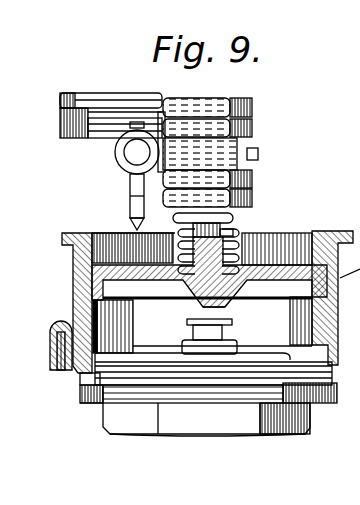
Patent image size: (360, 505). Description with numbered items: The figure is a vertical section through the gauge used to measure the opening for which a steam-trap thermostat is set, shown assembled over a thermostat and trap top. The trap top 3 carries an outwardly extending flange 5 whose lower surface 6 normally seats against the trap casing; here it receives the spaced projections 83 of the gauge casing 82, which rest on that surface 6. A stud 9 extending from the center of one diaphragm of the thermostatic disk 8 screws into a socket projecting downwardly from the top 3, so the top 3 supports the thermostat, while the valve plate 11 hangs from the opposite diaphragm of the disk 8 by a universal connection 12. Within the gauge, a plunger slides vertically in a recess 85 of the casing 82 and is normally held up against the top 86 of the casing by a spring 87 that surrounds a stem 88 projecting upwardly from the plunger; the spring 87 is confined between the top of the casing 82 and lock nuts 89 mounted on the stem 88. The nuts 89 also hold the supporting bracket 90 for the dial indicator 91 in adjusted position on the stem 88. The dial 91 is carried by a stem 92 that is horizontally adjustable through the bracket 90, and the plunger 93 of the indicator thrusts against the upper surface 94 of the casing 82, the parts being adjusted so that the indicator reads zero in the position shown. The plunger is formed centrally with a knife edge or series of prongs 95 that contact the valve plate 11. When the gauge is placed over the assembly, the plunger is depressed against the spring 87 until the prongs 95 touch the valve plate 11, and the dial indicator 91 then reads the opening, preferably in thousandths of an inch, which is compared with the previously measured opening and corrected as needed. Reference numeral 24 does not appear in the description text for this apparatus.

The top 3 is at (248, 410).
The outwardly extending flange 5 is at (93, 405).
The lower surface 6 is at (80, 378).
The thermostatic member or disk 8 is at (157, 358).
The stud 9 is at (350, 235).
The valve plate 11 is at (235, 327).
The universal connection 12 is at (208, 345).
The hexagonal nut 24 is at (155, 430).
The casing 82 is at (72, 294).
The spaced projections 83 is at (81, 378).
The recess 85 is at (97, 311).
The top 86 is at (120, 262).
The spring 87 is at (238, 226).
The stem 88 is at (233, 233).
The lock nuts 89 is at (254, 107).
The supporting bracket 90 is at (254, 129).
The dial indicator 91 is at (127, 86).
The stem 92 is at (131, 153).
The plunger 93 is at (140, 185).
The upper surface 94 is at (91, 236).
The knife edge or prongs 95 is at (228, 306).